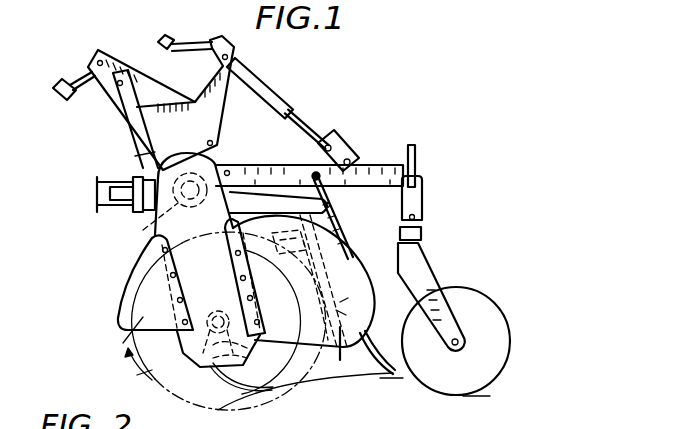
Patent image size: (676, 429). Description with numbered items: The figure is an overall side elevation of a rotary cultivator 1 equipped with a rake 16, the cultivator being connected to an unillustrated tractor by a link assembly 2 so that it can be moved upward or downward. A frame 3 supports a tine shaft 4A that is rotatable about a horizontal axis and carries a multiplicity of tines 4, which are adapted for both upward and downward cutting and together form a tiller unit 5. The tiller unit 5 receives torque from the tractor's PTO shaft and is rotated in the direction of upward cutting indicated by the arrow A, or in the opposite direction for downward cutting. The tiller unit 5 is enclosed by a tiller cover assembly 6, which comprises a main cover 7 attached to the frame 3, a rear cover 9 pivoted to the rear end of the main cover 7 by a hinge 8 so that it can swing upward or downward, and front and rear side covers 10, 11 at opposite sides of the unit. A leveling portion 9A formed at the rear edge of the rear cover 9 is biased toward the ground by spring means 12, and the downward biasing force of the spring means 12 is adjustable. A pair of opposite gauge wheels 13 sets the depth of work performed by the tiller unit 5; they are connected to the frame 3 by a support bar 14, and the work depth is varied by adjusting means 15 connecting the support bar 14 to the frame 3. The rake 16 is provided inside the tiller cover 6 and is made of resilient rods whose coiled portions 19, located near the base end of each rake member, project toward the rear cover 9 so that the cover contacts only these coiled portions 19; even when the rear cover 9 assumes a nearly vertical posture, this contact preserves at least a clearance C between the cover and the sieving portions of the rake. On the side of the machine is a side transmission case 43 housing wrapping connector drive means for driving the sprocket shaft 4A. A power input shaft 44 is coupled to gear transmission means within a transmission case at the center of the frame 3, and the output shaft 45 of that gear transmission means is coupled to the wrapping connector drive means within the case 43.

The rotary cultivator 1 is at (357, 146).
The link assembly 2 is at (94, 205).
The frame 3 is at (229, 156).
The tines 4 is at (273, 388).
The tine shaft 4A is at (222, 352).
The tiller unit 5 is at (300, 382).
The tiller cover assembly 6 is at (133, 271).
The main cover 7 is at (271, 178).
The hinge 8 is at (298, 178).
The rear cover 9 is at (370, 352).
The leveling portion 9A is at (392, 378).
The front side cover 10 is at (116, 338).
The rear side cover 11 is at (332, 355).
The spring means 12 is at (338, 221).
The gauge wheels 13 is at (505, 321).
The support bar 14 is at (385, 169).
The adjusting means 15 is at (288, 100).
The rake 16 is at (362, 311).
The coiled portions 19 is at (300, 285).
The side transmission case 43 is at (193, 273).
The power input shaft 44 is at (123, 192).
The output shaft 45 is at (152, 221).
The arrow indicating direction of upward cutting A is at (140, 378).
The clearance C is at (370, 390).